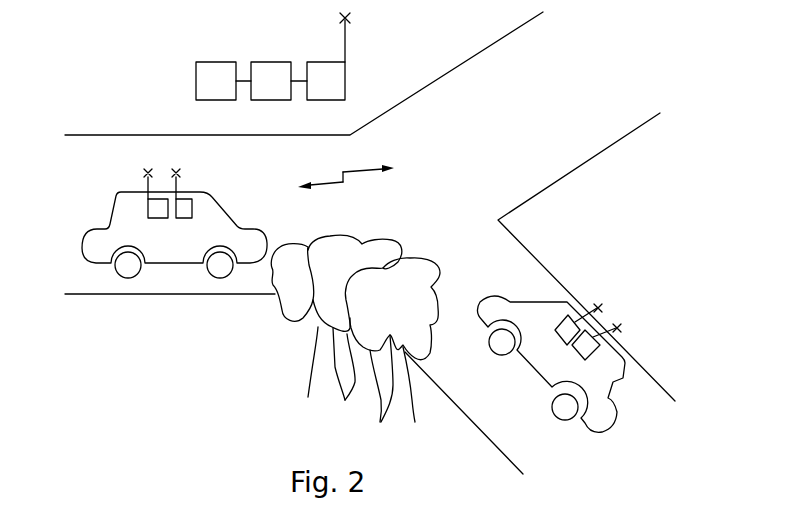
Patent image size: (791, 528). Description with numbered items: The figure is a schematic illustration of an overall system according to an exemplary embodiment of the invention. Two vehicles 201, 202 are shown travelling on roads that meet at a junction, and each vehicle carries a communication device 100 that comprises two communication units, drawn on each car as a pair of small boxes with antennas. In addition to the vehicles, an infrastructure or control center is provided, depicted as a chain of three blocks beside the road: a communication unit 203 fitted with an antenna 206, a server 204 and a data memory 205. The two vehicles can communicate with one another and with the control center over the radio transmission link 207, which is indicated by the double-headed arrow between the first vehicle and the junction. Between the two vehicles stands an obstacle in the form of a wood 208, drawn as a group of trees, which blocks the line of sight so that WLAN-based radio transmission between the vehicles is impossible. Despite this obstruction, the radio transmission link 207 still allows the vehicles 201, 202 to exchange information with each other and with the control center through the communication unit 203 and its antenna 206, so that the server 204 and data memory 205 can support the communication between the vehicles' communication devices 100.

The communication device 100 is at (133, 217).
The vehicle 201 is at (134, 191).
The vehicle 202 is at (622, 379).
The communication unit 203 is at (325, 100).
The server 204 is at (266, 100).
The data memory 205 is at (216, 100).
The antenna 206 is at (344, 42).
The radio transmission link 207 is at (343, 182).
The wood 208 is at (340, 368).